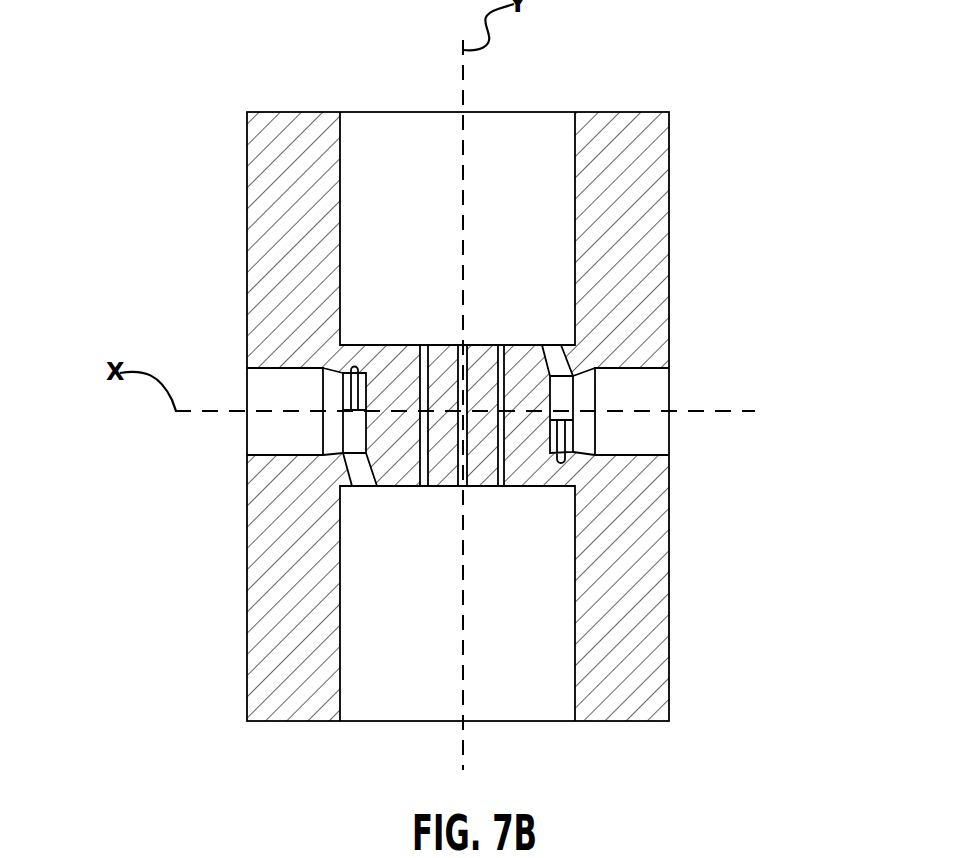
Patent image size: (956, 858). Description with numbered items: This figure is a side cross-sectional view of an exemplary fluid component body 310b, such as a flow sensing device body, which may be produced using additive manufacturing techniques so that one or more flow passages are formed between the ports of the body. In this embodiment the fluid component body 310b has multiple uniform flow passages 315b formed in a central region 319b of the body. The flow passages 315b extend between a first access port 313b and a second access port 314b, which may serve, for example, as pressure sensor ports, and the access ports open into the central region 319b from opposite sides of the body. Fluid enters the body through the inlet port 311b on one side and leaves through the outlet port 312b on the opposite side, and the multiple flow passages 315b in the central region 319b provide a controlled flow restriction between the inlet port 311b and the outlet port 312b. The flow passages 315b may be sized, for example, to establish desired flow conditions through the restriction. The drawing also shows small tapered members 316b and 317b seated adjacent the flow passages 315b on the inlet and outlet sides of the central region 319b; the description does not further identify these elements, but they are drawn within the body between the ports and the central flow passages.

The fluid component body 310b is at (172, 225).
The inlet port 311b is at (273, 368).
The outlet port 312b is at (635, 368).
The first access port 313b is at (340, 540).
The second access port 314b is at (573, 227).
The uniform flow passage 315b is at (348, 372).
The tapered retaining member 316b is at (373, 482).
The tapered retaining member 317b is at (546, 355).
The central region 319b is at (510, 460).